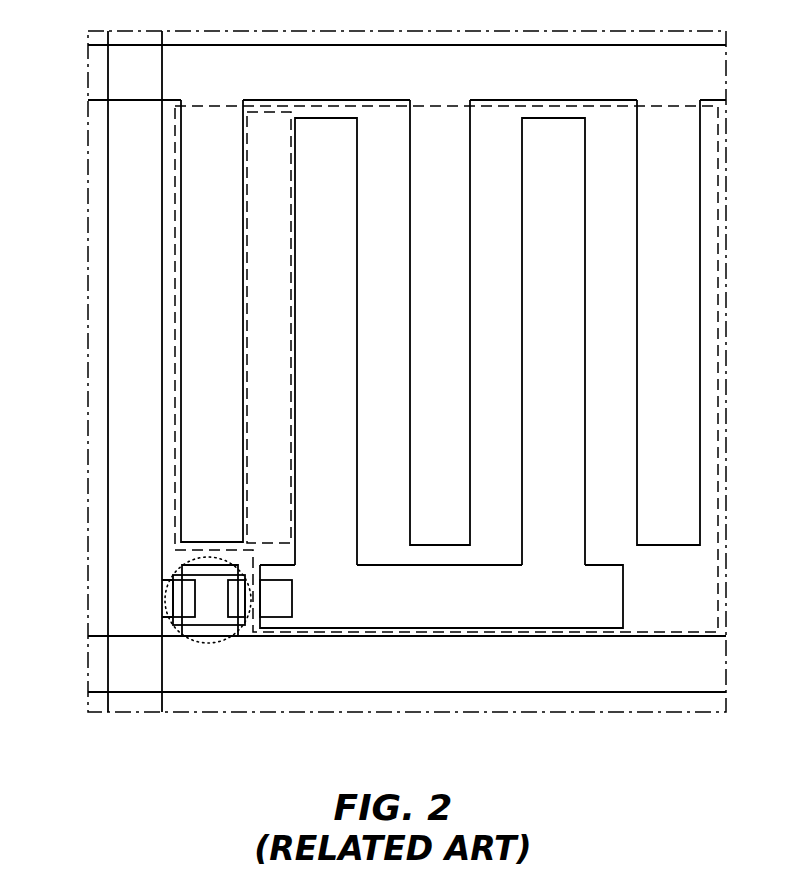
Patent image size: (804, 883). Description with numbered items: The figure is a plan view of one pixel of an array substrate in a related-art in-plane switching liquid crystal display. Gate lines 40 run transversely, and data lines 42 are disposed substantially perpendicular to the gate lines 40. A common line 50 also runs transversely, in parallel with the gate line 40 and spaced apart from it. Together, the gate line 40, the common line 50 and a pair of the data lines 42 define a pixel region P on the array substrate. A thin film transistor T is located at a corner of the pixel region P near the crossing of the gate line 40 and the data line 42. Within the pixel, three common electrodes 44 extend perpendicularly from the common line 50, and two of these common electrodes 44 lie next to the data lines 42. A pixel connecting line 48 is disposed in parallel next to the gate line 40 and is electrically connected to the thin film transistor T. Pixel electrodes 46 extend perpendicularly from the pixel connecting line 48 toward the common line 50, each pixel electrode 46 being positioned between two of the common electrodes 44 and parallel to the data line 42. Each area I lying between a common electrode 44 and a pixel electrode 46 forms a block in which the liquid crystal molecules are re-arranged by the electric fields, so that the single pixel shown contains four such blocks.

The gate line 40 is at (730, 637).
The data line 42 is at (162, 715).
The common electrode 44 is at (220, 171).
The pixel electrode 46 is at (338, 245).
The pixel connecting line 48 is at (617, 601).
The common line 50 is at (730, 47).
The area I is at (245, 257).
The pixel region P is at (163, 349).
The thin film transistor T is at (210, 645).